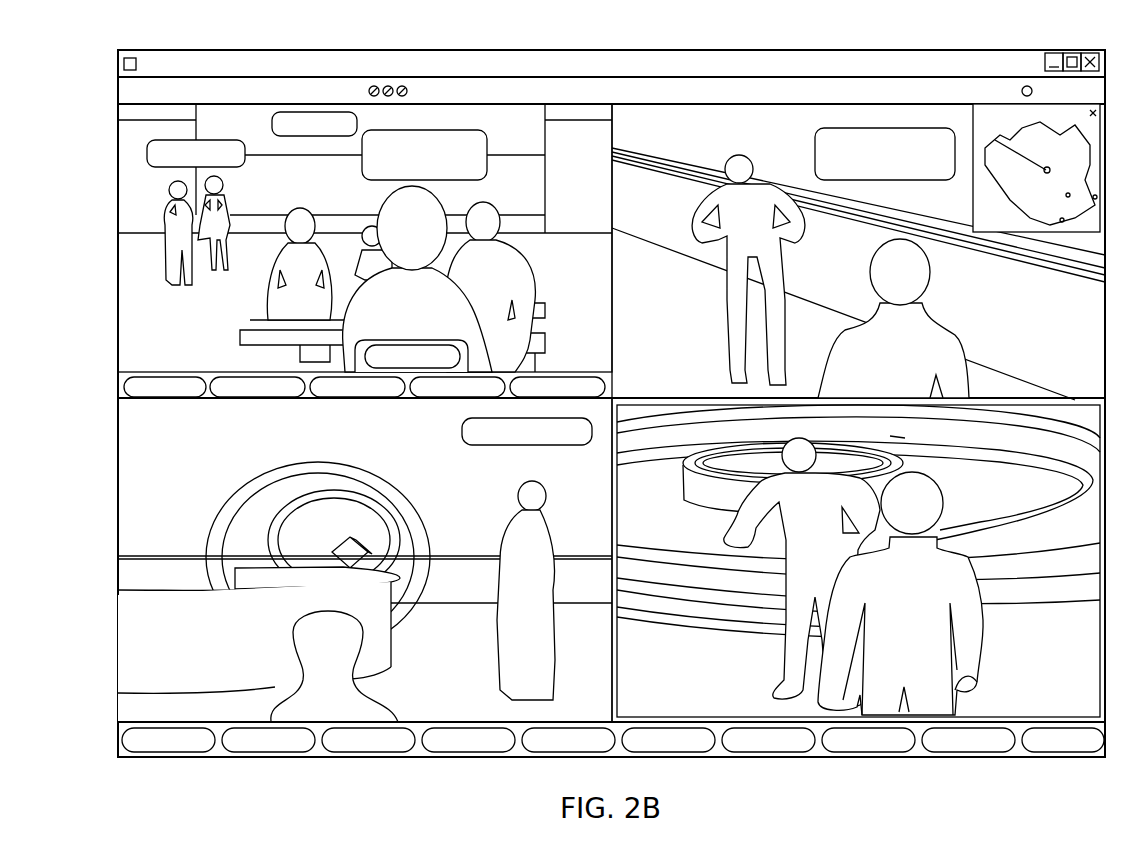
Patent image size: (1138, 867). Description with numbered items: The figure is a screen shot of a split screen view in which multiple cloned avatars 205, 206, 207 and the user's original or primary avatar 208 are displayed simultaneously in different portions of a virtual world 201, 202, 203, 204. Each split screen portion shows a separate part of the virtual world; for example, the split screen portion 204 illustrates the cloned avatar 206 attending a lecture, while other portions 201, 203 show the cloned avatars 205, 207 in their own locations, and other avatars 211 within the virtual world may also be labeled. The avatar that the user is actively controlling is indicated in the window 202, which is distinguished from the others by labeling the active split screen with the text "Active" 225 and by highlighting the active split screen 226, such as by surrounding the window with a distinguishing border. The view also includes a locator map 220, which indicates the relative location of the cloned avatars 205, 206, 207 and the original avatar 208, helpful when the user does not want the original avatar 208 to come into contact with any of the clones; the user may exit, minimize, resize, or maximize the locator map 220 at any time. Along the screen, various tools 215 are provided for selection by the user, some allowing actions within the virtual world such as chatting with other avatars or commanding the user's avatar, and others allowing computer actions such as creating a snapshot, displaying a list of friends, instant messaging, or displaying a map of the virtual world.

The portion of a virtual world 201 is at (438, 712).
The window 202 is at (858, 593).
The portion of a virtual world 203 is at (783, 125).
The split screen portion 204 is at (490, 125).
The cloned avatar 205 is at (365, 560).
The cloned avatar 206 is at (417, 279).
The cloned avatar 207 is at (893, 318).
The original or primary avatar 208 is at (900, 593).
The other avatars 211 is at (165, 196).
The tools 215 is at (229, 765).
The locator map 220 is at (990, 130).
The "Active" text 225 is at (900, 435).
The active split screen highlighting 226 is at (738, 716).